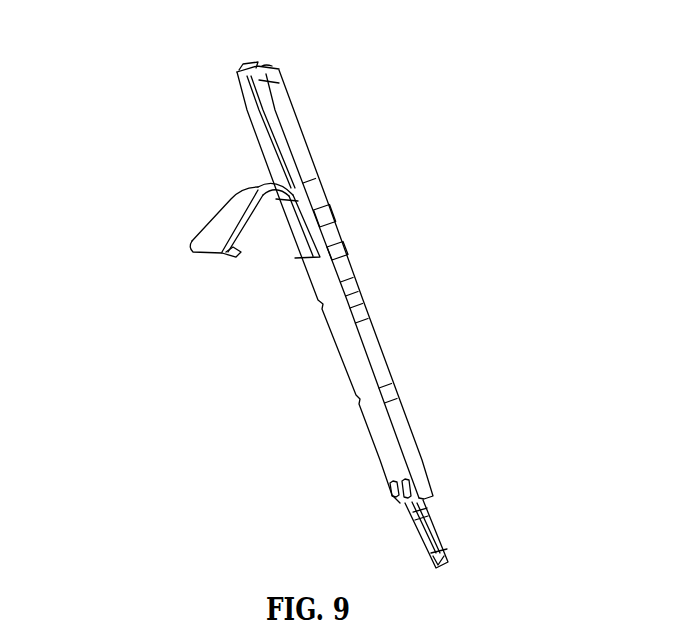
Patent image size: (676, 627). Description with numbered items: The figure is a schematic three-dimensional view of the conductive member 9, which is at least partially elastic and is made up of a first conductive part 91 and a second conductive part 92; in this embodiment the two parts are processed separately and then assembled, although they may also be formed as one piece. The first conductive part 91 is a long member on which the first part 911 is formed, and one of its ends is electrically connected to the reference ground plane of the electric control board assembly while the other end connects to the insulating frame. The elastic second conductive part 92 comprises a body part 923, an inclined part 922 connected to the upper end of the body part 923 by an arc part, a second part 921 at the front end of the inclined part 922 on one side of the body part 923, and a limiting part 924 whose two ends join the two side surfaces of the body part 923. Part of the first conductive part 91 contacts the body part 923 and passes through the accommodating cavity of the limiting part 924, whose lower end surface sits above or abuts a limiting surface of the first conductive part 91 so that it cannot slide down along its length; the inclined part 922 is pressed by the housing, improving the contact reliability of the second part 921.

The conductive member 9 is at (184, 103).
The first conductive part 91 is at (375, 78).
The first part 911 is at (493, 482).
The second conductive part 92 is at (206, 189).
The second part 921 is at (207, 253).
The inclined part 922 is at (235, 214).
The body part 923 is at (181, 325).
The limiting part 924 is at (367, 206).